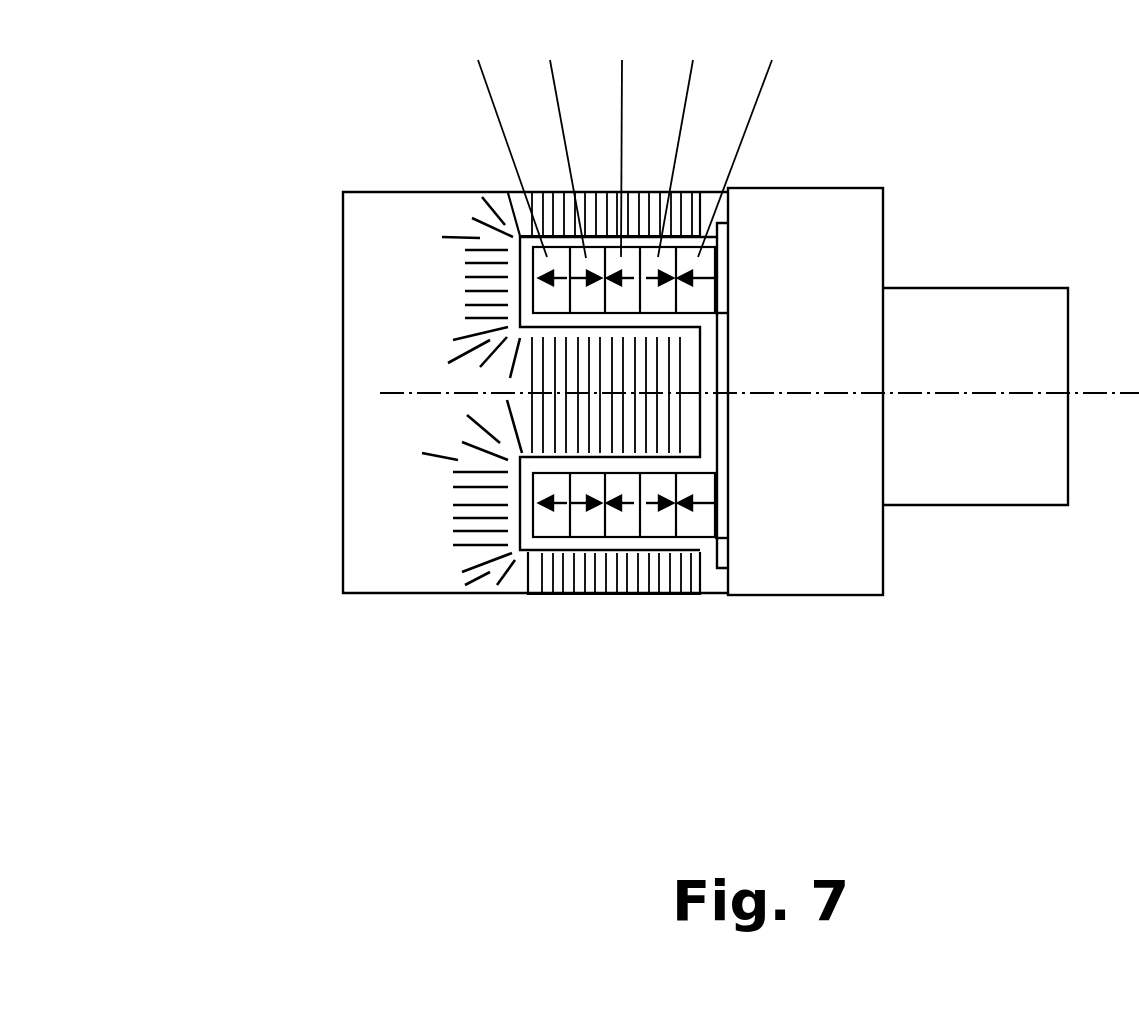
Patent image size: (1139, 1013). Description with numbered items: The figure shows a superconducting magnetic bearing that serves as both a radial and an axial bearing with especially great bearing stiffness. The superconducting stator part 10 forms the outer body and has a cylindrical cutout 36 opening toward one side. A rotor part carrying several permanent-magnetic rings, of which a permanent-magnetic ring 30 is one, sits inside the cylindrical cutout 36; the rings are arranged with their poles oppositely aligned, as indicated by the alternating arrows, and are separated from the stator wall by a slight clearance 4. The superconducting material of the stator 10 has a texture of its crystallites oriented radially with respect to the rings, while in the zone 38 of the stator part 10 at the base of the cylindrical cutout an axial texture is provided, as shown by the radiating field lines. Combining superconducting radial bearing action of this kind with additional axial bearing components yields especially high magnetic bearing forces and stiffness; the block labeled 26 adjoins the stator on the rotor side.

The superconducting stator part 10 is at (328, 443).
The bearing block 26 is at (905, 227).
The cylindrical cutout 36 is at (527, 503).
The clearance 4 is at (612, 572).
The permanent-magnetic ring 30 is at (697, 523).
The zone 38 is at (477, 528).